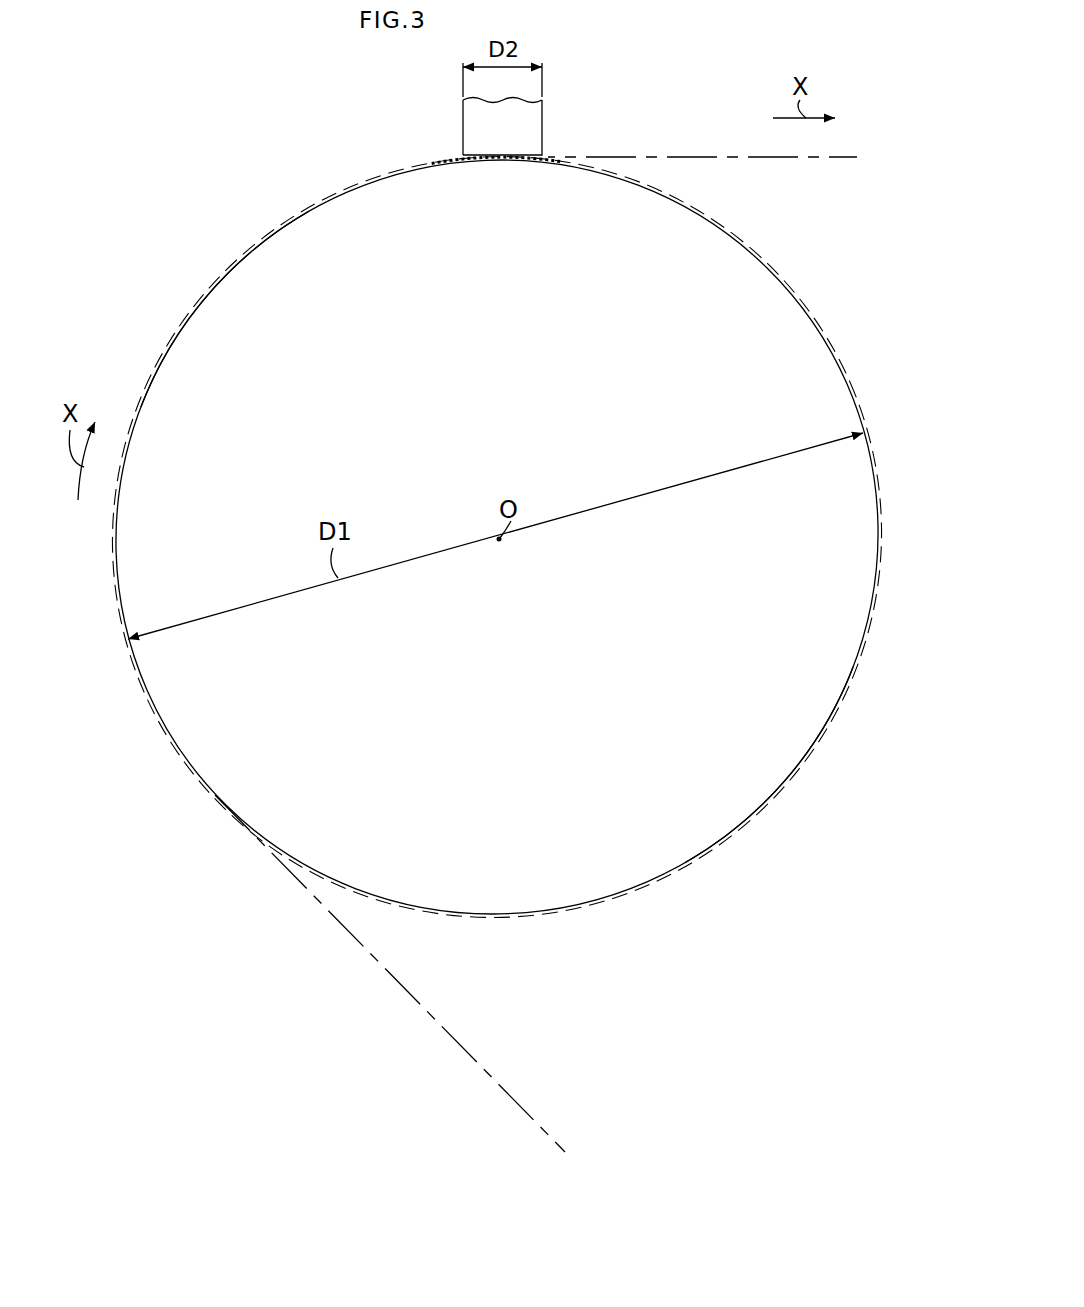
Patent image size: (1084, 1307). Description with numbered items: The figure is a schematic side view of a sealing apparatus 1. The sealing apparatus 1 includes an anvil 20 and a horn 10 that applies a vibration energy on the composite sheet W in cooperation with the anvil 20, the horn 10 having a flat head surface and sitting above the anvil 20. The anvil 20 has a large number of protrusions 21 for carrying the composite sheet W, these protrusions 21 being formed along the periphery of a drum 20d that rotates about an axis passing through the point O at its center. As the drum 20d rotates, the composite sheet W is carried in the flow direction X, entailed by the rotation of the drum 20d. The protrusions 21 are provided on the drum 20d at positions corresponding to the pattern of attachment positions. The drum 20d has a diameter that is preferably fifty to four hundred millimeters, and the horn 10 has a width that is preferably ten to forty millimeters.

The sealing apparatus 1 is at (266, 191).
The horn 10 is at (523, 119).
The anvil 20 is at (780, 328).
The drum 20d is at (755, 778).
The protrusions 21 is at (463, 160).
The composite sheet W is at (690, 157).